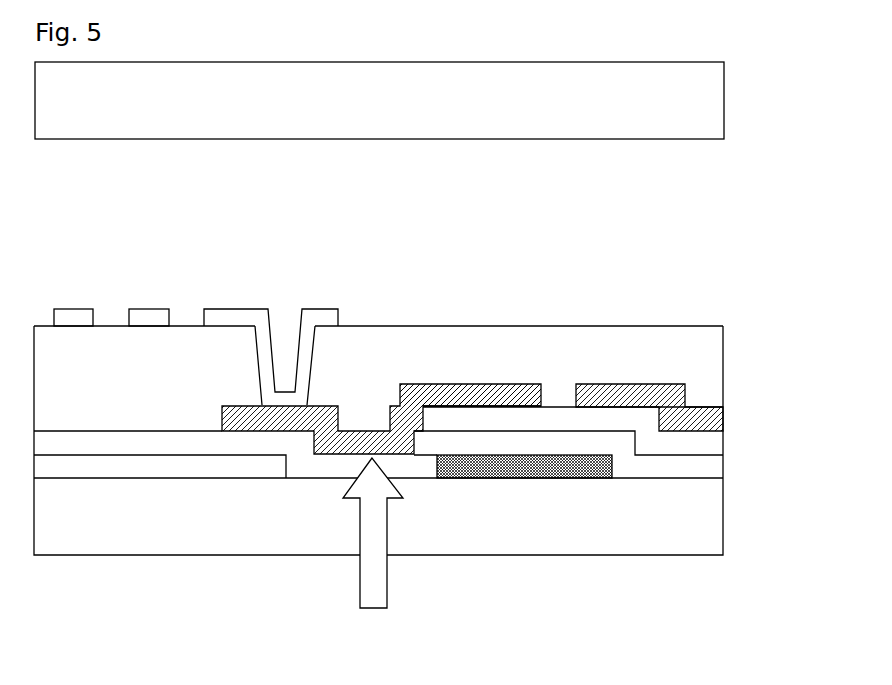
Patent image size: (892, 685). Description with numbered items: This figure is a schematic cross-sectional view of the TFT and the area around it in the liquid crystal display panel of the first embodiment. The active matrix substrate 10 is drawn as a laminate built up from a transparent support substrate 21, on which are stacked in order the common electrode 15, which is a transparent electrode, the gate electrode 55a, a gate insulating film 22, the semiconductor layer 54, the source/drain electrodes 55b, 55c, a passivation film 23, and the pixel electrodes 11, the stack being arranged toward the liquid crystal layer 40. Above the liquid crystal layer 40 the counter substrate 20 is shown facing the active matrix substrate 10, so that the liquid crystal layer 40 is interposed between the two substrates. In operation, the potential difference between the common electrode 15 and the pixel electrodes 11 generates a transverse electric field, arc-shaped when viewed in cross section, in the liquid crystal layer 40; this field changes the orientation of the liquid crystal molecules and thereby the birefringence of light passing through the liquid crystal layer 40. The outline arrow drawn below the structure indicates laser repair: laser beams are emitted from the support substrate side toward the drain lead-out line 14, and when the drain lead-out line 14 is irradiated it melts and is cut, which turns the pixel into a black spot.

The active matrix substrate 10 is at (786, 317).
The pixel electrode 11 is at (318, 318).
The drain lead-out line 14 is at (299, 420).
The common electrode 15 is at (183, 466).
The counter substrate 20 is at (737, 62).
The transparent support substrate 21 is at (710, 520).
The gate insulating film 22 is at (710, 470).
The passivation film 23 is at (710, 360).
The liquid crystal layer 40 is at (737, 141).
The semiconductor layer 54 is at (710, 440).
The gate electrode 55a is at (547, 467).
The source/drain electrode 55b is at (681, 425).
The source/drain electrode 55c is at (483, 398).